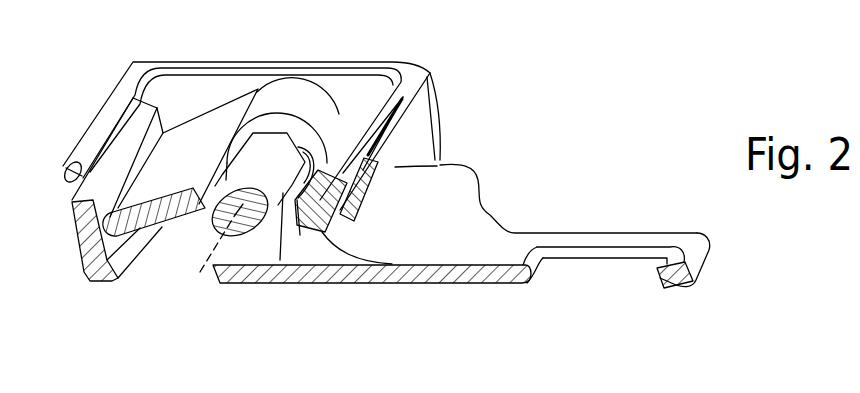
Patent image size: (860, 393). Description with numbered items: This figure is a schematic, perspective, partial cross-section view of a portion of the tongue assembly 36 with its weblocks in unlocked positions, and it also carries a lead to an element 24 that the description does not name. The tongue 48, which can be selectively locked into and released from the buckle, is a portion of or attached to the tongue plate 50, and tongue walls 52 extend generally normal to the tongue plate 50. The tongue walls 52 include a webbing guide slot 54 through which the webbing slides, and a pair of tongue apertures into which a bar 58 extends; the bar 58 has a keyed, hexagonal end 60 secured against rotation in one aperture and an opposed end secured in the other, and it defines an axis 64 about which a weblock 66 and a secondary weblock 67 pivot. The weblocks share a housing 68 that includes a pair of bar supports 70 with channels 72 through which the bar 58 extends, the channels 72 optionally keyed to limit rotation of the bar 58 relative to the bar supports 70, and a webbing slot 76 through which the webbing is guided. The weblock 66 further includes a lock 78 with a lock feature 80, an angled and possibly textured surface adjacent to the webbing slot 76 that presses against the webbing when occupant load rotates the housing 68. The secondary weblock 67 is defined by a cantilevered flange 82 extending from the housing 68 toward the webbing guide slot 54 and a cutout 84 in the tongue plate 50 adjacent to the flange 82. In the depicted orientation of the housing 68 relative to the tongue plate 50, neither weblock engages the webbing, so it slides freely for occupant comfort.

The frame member 24 is at (740, 0).
The tongue assembly 36 is at (512, 122).
The tongue 48 is at (705, 268).
The tongue plate 50 is at (482, 188).
The tongue walls 52 is at (173, 62).
The webbing guide slot 54 is at (75, 190).
The bar 58 is at (280, 260).
The keyed end 60 is at (272, 133).
The axis 64 is at (200, 272).
The weblock 66 is at (405, 50).
The secondary weblock 67 is at (127, 290).
The housing 68 is at (200, 113).
The bar supports 70 is at (320, 110).
The channels 72 is at (300, 235).
The webbing slot 76 is at (432, 72).
The lock 78 is at (353, 92).
The lock feature 80 is at (383, 270).
The cantilevered flange 82 is at (161, 226).
The cutout 84 is at (213, 270).